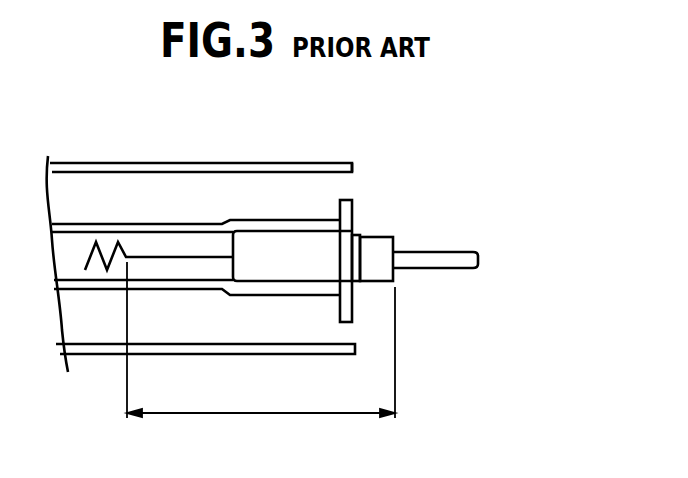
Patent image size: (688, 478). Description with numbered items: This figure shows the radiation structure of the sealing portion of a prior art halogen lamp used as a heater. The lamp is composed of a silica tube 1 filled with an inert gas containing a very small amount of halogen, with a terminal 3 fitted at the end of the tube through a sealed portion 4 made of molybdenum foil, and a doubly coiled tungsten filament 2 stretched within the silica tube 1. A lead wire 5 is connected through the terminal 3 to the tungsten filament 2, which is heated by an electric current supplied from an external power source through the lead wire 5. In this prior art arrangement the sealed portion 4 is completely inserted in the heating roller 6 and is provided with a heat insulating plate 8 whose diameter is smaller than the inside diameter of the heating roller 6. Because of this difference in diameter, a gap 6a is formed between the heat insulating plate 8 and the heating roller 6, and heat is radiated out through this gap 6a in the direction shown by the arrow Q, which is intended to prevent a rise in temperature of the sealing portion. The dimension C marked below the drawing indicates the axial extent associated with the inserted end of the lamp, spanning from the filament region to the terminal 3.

The silica tube 1 is at (89, 292).
The doubly coiled tungsten filament 2 is at (166, 257).
The terminal 3 is at (393, 275).
The sealed portion 4 is at (270, 276).
The lead wire 5 is at (451, 252).
The heating roller 6 is at (225, 162).
The gap 6a is at (350, 179).
The heat insulating plate 8 is at (353, 208).
The arrow Q is at (302, 213).
The length dimension C is at (261, 356).